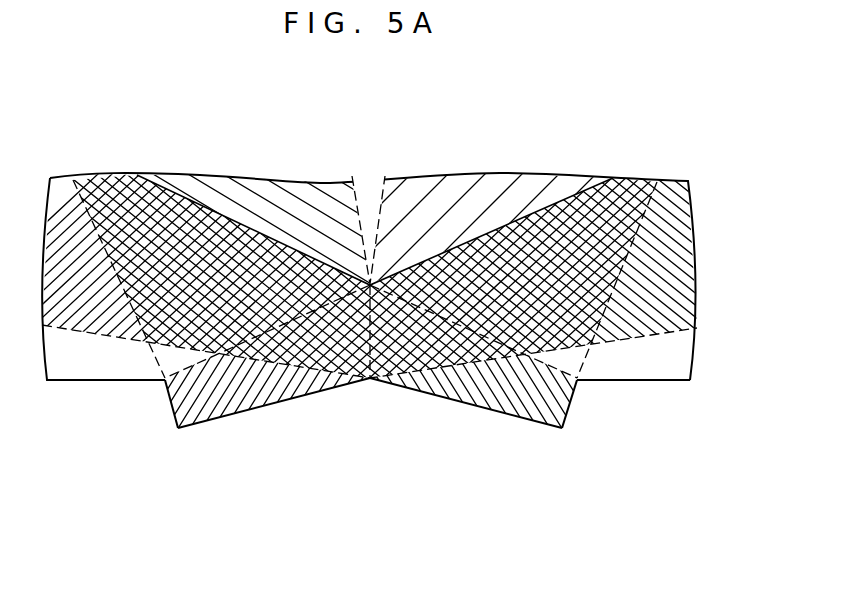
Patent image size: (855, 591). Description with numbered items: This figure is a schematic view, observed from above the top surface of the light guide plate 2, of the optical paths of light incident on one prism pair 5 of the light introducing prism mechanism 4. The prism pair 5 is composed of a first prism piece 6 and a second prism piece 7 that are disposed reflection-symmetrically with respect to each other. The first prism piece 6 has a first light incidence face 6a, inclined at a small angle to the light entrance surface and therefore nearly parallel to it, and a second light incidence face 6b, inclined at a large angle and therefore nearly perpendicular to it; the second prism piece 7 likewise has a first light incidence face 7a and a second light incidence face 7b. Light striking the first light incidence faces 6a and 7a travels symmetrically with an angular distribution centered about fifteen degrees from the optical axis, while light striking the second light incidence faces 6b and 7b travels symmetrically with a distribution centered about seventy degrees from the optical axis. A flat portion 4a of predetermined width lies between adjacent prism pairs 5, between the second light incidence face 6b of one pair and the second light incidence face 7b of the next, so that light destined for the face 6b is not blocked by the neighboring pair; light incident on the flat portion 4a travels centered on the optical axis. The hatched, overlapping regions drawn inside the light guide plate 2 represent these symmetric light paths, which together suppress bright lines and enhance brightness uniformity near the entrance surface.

The light guide plate 2 is at (606, 143).
The light introducing prism mechanism 4 is at (581, 488).
The flat portion 4a is at (650, 381).
The prism pair 5 is at (370, 440).
The first prism piece 6 is at (255, 418).
The first light incidence face 6a is at (262, 404).
The second light incidence face 6b is at (175, 414).
The second prism piece 7 is at (485, 417).
The first light incidence face 7a is at (503, 413).
The second light incidence face 7b is at (565, 422).